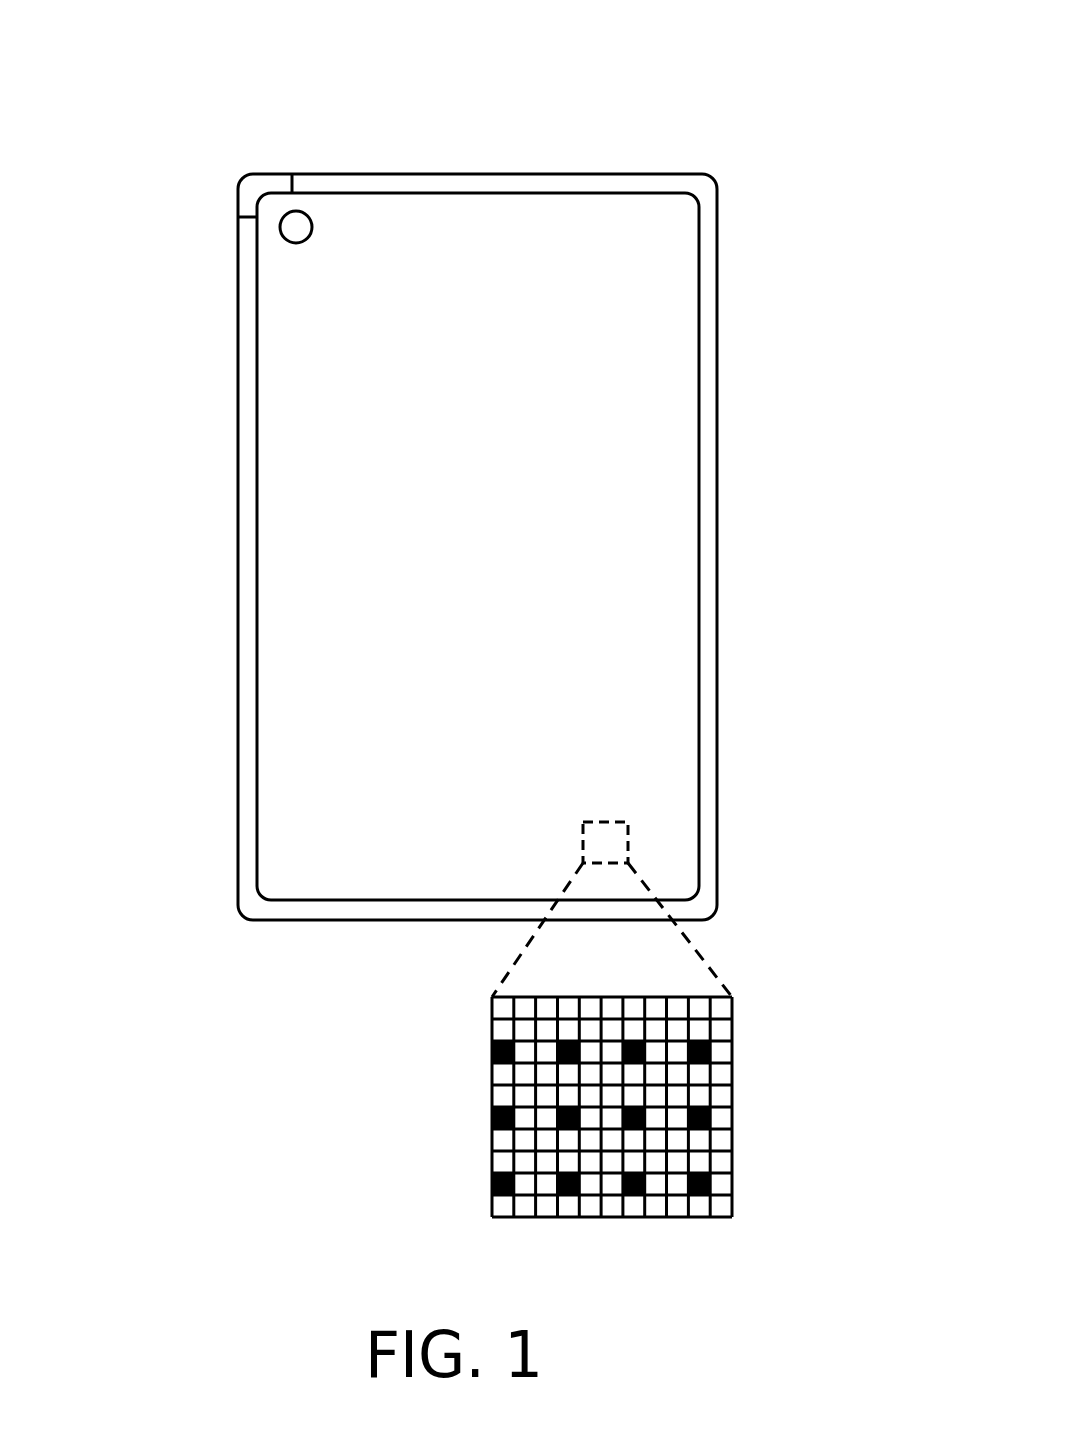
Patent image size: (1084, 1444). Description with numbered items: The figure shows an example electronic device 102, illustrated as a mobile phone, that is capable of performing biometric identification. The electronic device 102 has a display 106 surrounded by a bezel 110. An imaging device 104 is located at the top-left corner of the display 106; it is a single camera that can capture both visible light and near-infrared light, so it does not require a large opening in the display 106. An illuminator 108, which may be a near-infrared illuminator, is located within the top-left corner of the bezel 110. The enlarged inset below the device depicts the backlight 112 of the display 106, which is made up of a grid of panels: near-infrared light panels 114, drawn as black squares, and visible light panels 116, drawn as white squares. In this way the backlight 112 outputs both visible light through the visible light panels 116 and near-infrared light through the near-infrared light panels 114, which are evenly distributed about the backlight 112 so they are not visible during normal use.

The electronic device 102 is at (723, 100).
The imaging device 104 is at (283, 233).
The display 106 is at (478, 546).
The illuminator 108 is at (253, 187).
The bezel 110 is at (372, 180).
The backlight 112 is at (493, 997).
The near-infrared light panel 114 is at (492, 1173).
The visible light panel 116 is at (723, 1027).